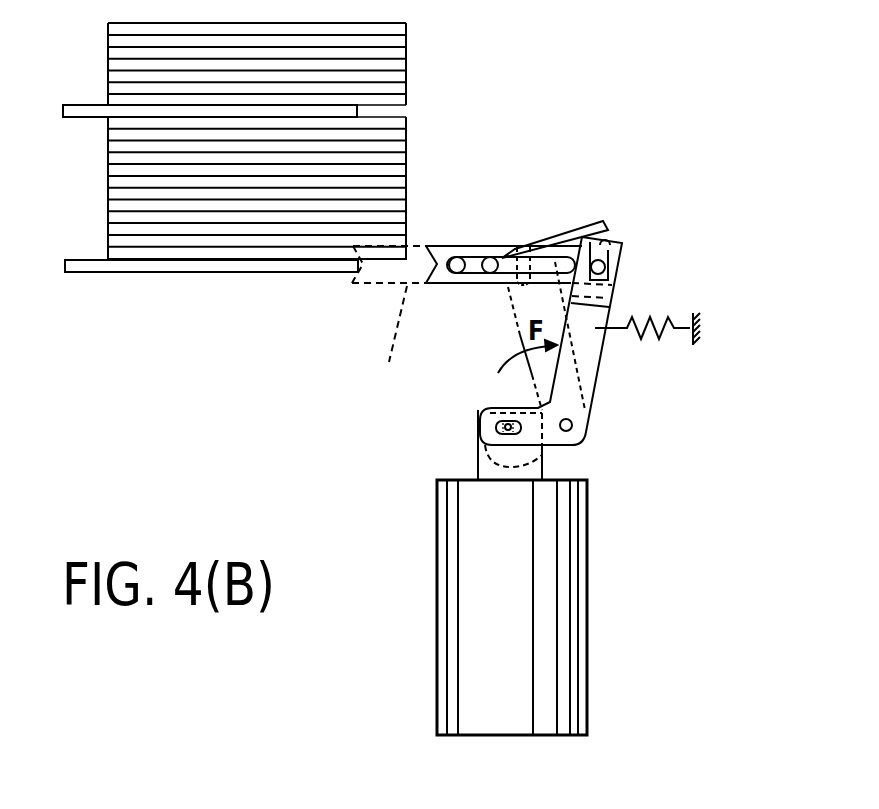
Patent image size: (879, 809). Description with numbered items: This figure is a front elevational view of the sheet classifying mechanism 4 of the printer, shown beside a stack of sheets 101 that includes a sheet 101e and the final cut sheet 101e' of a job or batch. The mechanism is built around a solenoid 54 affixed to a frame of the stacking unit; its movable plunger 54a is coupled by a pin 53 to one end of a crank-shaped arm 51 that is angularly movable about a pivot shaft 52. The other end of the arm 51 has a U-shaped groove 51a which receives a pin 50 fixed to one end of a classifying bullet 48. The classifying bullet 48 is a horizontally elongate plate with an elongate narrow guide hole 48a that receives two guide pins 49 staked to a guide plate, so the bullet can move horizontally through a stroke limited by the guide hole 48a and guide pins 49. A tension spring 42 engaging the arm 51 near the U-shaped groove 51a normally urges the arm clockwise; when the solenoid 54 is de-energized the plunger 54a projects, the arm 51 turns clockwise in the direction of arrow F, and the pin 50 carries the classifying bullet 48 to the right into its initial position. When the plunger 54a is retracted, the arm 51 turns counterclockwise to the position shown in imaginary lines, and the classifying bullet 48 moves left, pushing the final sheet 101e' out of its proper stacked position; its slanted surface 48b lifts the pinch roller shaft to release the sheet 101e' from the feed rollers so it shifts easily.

The sheet classifying mechanism 4 is at (361, 481).
The tension spring 42 is at (657, 337).
The classifying bullet 48 is at (472, 282).
The guide hole 48a is at (555, 257).
The slanted surface 48b is at (583, 236).
The guide pins 49 is at (491, 258).
The pin 50 is at (604, 265).
The crank-shaped arm 51 is at (588, 363).
The U-shaped groove 51a is at (608, 238).
The pivot shaft 52 is at (570, 429).
The pin 53 is at (500, 422).
The solenoid 54 is at (588, 603).
The movable plunger 54a is at (482, 462).
The paper stack 101 is at (415, 242).
The top sheet 101e is at (218, 148).
The final cut sheet 101e' is at (194, 311).